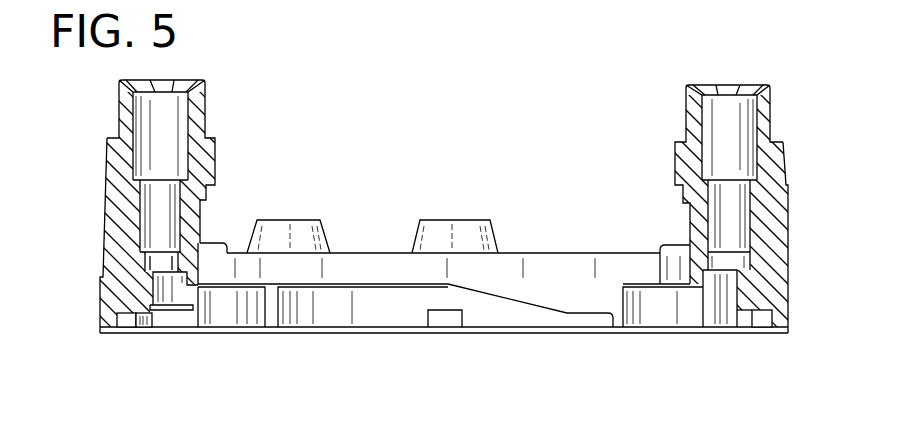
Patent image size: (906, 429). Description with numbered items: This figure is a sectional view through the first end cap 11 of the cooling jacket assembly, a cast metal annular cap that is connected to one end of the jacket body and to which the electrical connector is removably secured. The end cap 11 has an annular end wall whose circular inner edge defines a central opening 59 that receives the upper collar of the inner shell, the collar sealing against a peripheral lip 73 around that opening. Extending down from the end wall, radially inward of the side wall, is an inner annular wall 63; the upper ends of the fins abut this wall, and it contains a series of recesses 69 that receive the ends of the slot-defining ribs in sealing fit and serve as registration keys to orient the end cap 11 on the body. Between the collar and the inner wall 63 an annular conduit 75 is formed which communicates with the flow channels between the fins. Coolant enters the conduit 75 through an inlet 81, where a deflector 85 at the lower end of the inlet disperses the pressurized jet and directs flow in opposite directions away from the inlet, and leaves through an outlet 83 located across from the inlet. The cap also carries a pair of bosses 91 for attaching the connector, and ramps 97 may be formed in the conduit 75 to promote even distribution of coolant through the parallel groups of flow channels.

The first end cap 11 is at (548, 343).
The central opening 59 is at (200, 238).
The inner annular wall 63 is at (203, 297).
The recesses 69 is at (126, 320).
The peripheral lip 73 is at (200, 277).
The annular conduit 75 is at (367, 295).
The inlet 81 is at (770, 114).
The outlet 83 is at (120, 120).
The deflector 85 is at (187, 313).
The bosses 91 is at (418, 231).
The ramps 97 is at (492, 298).